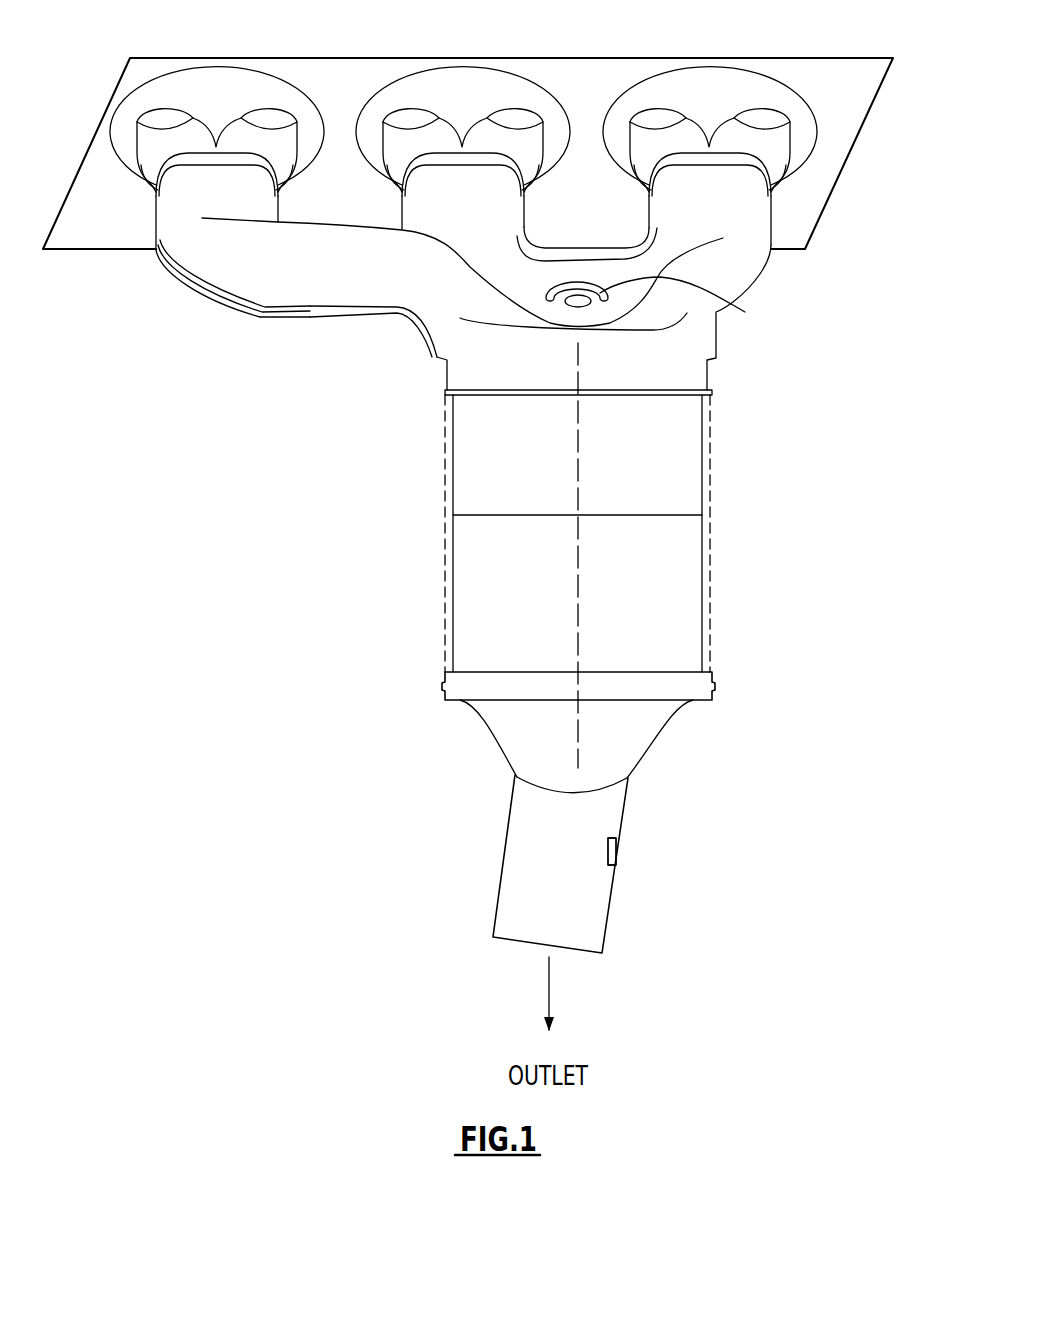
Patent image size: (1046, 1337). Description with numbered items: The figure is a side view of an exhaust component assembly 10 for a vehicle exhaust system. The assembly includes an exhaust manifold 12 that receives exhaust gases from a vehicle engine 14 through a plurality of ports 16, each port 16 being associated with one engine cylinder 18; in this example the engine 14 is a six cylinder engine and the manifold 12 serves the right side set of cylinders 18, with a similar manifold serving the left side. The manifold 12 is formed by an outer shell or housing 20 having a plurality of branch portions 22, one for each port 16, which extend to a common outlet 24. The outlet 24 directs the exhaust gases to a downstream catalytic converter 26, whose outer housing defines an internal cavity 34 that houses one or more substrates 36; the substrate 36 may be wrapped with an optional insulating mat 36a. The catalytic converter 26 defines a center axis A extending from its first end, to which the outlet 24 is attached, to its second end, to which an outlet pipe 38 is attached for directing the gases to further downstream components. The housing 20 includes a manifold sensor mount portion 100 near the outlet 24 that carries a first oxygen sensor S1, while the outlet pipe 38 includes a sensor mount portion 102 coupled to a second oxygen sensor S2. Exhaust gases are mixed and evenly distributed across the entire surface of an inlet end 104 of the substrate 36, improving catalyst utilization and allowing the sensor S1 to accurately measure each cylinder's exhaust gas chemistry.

The exhaust component assembly 10 is at (864, 258).
The exhaust manifold 12 is at (312, 322).
The vehicle engine 14 is at (862, 75).
The ports 16 is at (259, 98).
The engine cylinder 18 is at (282, 100).
The outer shell or housing 20 is at (257, 268).
The branch portions 22 is at (168, 210).
The common outlet 24 is at (437, 360).
The catalytic converter 26 is at (742, 540).
The internal cavity 34 is at (717, 662).
The substrates 36 is at (462, 487).
The mat 36a is at (712, 472).
The outlet pipe 38 is at (525, 860).
The manifold sensor mount portion 100 is at (745, 312).
The sensor mount portion 102 is at (615, 863).
The inlet end 104 is at (487, 395).
The first oxygen sensor S1 is at (578, 273).
The second oxygen sensor S2 is at (626, 849).
The center axis A is at (578, 733).